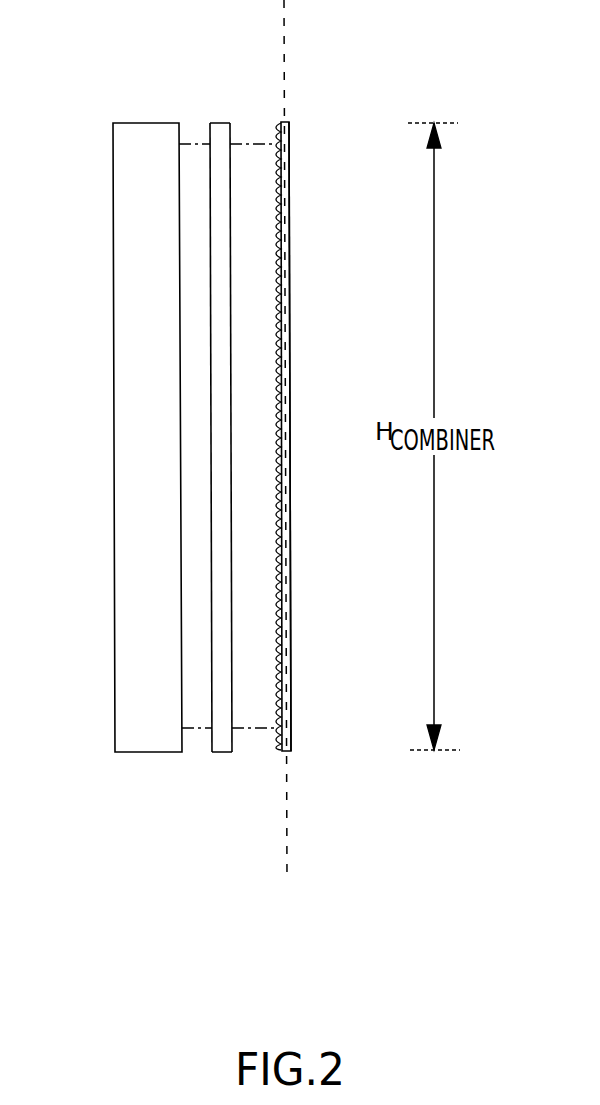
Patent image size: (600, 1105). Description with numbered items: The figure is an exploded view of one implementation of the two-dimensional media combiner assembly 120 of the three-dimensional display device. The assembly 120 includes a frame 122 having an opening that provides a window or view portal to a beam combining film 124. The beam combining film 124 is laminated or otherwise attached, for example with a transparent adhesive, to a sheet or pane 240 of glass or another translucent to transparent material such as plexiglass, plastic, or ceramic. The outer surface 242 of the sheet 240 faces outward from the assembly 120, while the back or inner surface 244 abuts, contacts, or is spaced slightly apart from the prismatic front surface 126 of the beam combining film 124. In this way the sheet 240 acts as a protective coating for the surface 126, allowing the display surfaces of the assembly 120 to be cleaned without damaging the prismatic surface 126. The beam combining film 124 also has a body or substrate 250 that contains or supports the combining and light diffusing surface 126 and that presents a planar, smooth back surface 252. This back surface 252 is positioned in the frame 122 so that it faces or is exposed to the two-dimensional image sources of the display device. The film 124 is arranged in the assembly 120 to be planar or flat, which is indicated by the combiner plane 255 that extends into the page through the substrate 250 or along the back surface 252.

The 2D media combiner assembly 120 is at (100, 76).
The frame 122 is at (148, 752).
The beam combining film 124 is at (292, 451).
The prismatic front surface 126 is at (281, 722).
The sheet or pane 240 is at (214, 396).
The outer surface 242 is at (209, 127).
The inner surface 244 is at (231, 132).
The body or substrate 250 is at (284, 122).
The back surface 252 is at (291, 720).
The combiner plane 255 is at (304, 862).